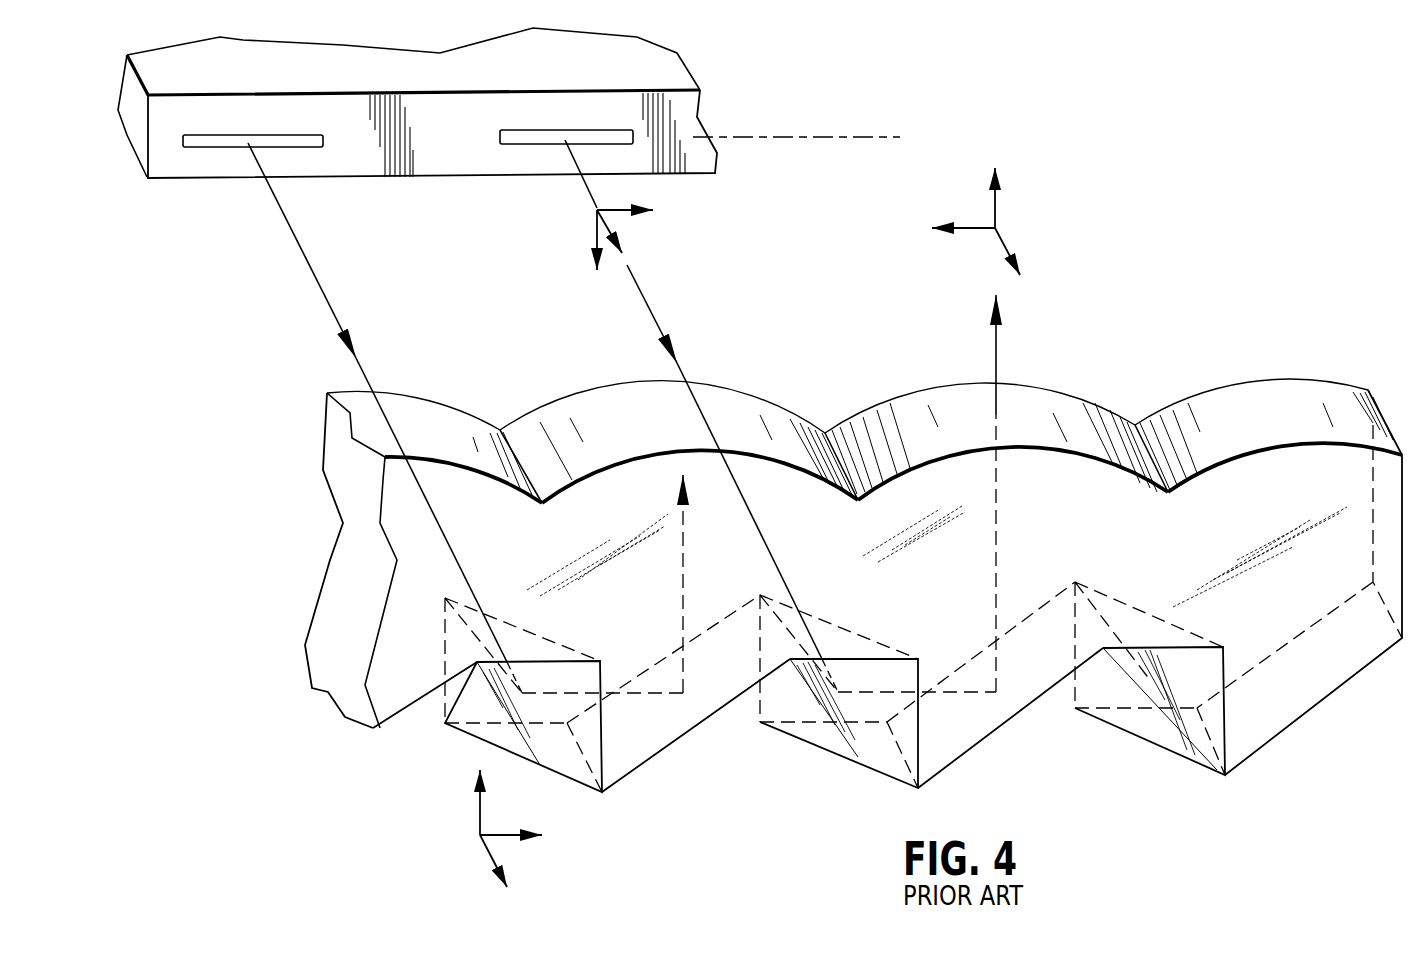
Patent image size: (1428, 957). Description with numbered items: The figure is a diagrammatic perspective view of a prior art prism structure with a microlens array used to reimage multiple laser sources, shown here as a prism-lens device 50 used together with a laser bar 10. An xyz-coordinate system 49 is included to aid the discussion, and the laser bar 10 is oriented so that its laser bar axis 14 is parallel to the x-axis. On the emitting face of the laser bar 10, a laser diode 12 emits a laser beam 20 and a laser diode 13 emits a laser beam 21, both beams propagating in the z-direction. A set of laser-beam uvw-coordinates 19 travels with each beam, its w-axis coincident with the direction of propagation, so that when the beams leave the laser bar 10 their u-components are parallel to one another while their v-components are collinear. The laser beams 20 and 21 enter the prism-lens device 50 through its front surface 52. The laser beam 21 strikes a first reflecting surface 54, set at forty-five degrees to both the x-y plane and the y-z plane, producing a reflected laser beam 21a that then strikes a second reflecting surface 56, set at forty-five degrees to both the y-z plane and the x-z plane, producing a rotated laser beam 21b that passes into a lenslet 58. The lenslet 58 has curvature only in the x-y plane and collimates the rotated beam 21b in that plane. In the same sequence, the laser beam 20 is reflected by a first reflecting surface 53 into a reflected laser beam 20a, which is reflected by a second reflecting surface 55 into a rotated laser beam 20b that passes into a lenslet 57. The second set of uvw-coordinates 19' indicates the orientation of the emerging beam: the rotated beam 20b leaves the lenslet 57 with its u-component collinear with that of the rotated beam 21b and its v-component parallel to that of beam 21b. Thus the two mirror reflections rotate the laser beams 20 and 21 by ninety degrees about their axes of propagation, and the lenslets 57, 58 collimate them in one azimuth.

The laser bar 10 is at (733, 90).
The laser diode 12 is at (310, 148).
The laser diode 13 is at (513, 143).
The laser bar axis 14 is at (863, 137).
The laser-beam uvw-coordinates 19 is at (605, 249).
The laser-beam uvw-coordinates 19' is at (984, 225).
The laser beam 20 is at (300, 262).
The reflected laser beam 20a is at (658, 698).
The rotated laser beam 20b is at (680, 612).
The laser beam 21 is at (645, 300).
The reflected laser beam 21a is at (973, 697).
The rotated laser beam 21b is at (1000, 357).
The xyz-coordinate system 49 is at (475, 833).
The prism-lens device 50 is at (1195, 318).
The front surface 52 is at (882, 402).
The first reflecting surface 53 is at (463, 700).
The first reflecting surface 54 is at (790, 698).
The second reflecting surface 55 is at (677, 723).
The second reflecting surface 56 is at (1037, 677).
The lenslet 57 is at (590, 410).
The lenslet 58 is at (972, 390).